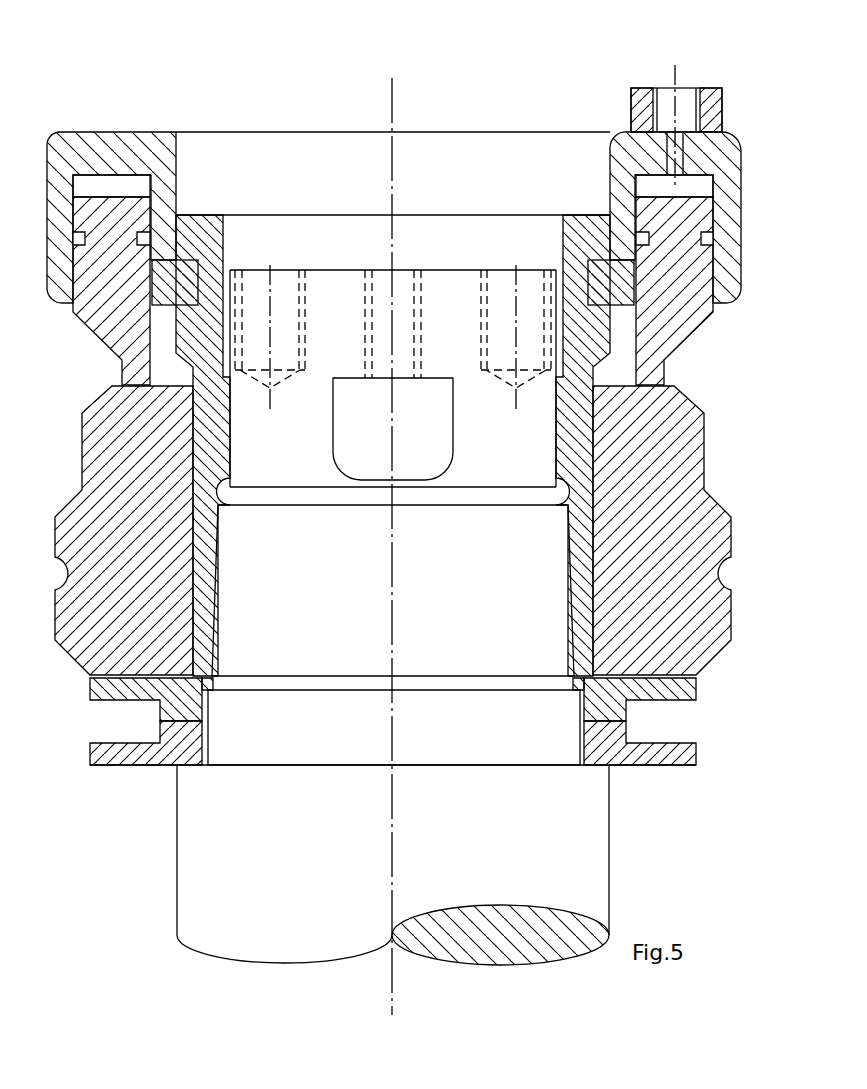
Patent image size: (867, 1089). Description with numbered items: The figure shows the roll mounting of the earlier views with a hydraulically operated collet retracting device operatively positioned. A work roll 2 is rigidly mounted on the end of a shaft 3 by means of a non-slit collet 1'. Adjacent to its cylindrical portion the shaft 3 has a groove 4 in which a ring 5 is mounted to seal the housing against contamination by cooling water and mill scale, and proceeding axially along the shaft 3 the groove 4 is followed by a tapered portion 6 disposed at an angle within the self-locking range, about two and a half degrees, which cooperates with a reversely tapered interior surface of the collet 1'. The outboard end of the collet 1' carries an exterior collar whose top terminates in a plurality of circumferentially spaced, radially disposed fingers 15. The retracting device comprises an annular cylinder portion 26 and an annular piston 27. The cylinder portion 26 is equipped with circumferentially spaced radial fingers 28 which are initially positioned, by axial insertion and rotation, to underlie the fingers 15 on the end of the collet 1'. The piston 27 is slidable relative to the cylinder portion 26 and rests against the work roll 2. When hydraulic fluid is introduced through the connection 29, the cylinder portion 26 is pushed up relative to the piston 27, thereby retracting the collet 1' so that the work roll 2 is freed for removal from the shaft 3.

The annular cylinder portion 26 is at (100, 157).
The annular piston 27 is at (137, 213).
The fingers 15 is at (188, 228).
The radial fingers 28 is at (188, 280).
The collet 1' is at (393, 371).
The connection 29 is at (663, 88).
The work roll 2 is at (660, 443).
The ring 5 is at (128, 755).
The groove 4 is at (537, 733).
The tapered portion 6 is at (407, 657).
The shaft 3 is at (215, 862).